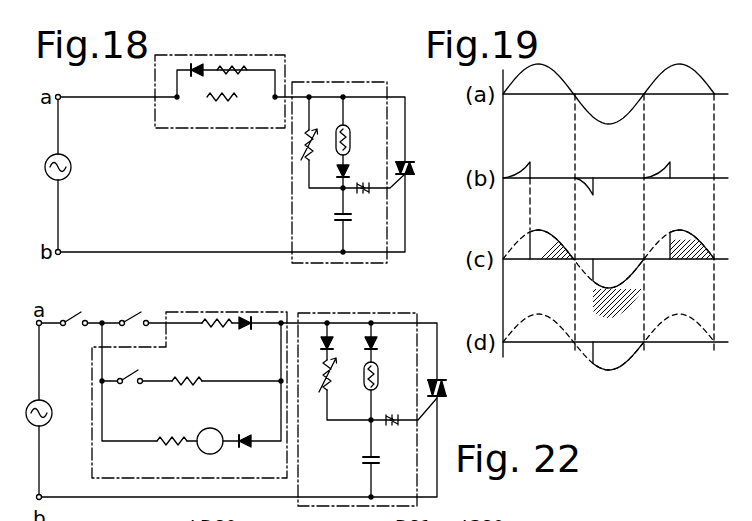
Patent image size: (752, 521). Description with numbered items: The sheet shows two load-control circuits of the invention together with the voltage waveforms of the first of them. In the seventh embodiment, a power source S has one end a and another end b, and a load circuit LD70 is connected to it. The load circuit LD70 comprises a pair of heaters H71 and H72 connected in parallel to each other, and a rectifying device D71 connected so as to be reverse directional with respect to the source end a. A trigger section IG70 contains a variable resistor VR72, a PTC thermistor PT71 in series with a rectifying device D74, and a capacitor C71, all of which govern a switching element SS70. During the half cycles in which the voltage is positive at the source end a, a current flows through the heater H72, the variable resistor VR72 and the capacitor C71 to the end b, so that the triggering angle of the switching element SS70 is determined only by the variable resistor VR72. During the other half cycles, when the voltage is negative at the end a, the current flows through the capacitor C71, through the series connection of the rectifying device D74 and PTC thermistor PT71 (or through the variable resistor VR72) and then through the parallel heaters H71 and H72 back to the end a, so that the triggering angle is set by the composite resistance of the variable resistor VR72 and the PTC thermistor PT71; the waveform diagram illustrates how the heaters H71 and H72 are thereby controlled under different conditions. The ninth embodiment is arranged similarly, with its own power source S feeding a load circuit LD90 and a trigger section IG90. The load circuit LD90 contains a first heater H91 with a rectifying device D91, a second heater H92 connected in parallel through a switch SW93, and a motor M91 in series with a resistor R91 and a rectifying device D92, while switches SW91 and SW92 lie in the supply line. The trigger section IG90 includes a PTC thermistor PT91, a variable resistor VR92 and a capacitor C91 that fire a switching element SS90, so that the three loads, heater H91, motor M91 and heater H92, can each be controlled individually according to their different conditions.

In FIG. 18, the power source S is at (65, 157).
In FIG. 22, the power source S is at (46, 403).
In FIG. 18, the load circuit LD70 is at (248, 55).
In FIG. 18, the rectifying device D71 is at (196, 63).
In FIG. 18, the heater H71 is at (237, 80).
In FIG. 18, the heater H72 is at (232, 109).
In FIG. 18, the ignition (trigger) circuit IG70 is at (333, 82).
In FIG. 18, the variable resistor VR72 is at (303, 148).
In FIG. 18, the PTC thermistor PT71 is at (350, 141).
In FIG. 18, the rectifying device D74 is at (336, 172).
In FIG. 18, the switching element SS70 is at (425, 182).
In FIG. 18, the capacitor C71 is at (358, 229).
In FIG. 22, the switch SW91 is at (69, 333).
In FIG. 22, the switch SW92 is at (160, 304).
In FIG. 22, the switch SW93 is at (136, 390).
In FIG. 22, the load circuit LD90 is at (208, 312).
In FIG. 22, the first heater H91 is at (211, 336).
In FIG. 22, the diode D91 is at (259, 338).
In FIG. 22, the second heater H92 is at (194, 371).
In FIG. 22, the motor M91 is at (214, 428).
In FIG. 22, the resistor R91 is at (166, 454).
In FIG. 22, the diode D92 is at (258, 453).
In FIG. 22, the ignition (trigger) circuit IG90 is at (333, 312).
In FIG. 22, the photo-thyristor / photo element PT91 is at (378, 364).
In FIG. 22, the triac (solid state switch) SS90 is at (457, 399).
In FIG. 22, the variable resistor VR92 is at (322, 377).
In FIG. 22, the capacitor C91 is at (348, 465).